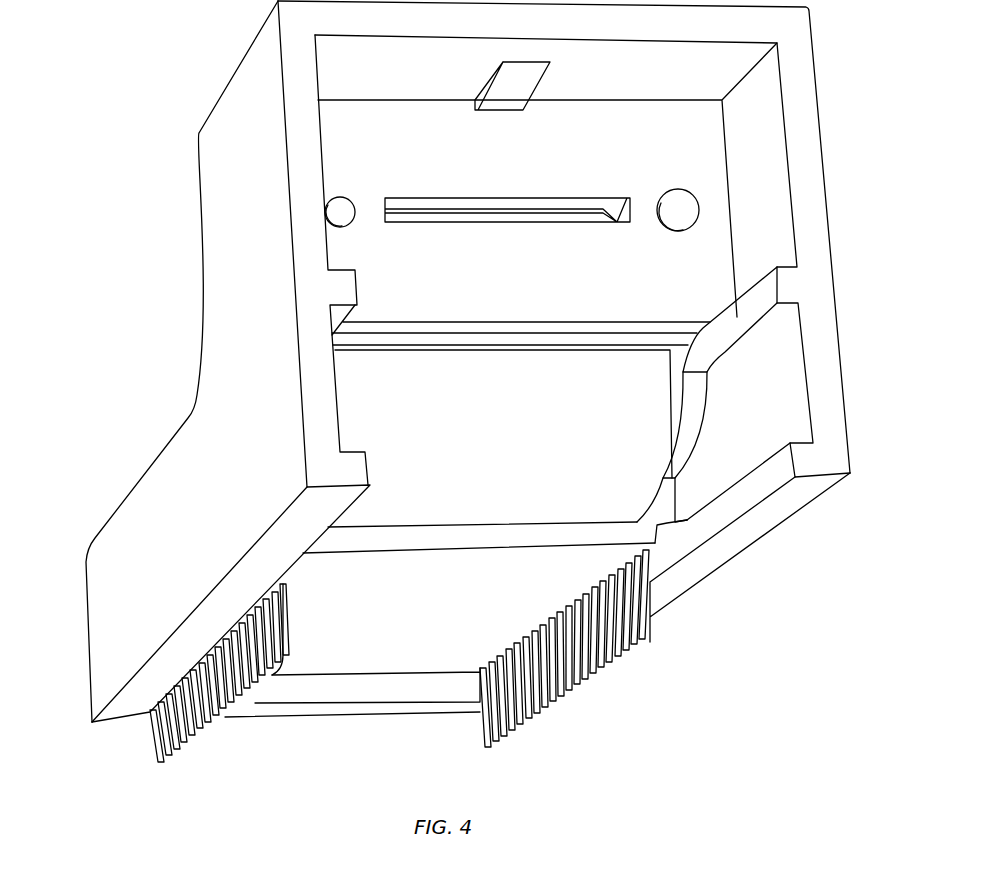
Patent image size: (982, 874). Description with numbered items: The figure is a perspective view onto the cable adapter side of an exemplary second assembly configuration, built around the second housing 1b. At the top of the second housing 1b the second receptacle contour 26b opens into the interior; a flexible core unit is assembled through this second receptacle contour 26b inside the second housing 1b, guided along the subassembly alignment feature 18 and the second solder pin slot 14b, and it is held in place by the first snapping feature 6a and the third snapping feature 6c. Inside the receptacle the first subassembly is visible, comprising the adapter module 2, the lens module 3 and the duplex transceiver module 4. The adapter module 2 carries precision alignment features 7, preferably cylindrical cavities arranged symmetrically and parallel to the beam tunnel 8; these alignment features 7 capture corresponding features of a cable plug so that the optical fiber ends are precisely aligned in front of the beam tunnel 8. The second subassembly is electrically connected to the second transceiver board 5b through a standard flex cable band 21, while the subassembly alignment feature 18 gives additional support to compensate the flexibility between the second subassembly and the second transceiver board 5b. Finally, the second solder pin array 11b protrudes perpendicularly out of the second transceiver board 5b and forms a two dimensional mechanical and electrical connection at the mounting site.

The second housing 1b is at (95, 568).
The adapter module 2 is at (338, 258).
The lens module 3 is at (333, 342).
The duplex transceiver module 4 is at (335, 350).
The second transceiver board 5b is at (383, 593).
The first snapping feature 6a is at (500, 100).
The third snapping feature 6c is at (667, 527).
The precision alignment features 7 is at (332, 213).
The beam tunnel 8 is at (600, 203).
The second solder pin array 11b is at (290, 672).
The second solder pin slot 14b is at (780, 467).
The subassembly alignment feature 18 is at (757, 292).
The flex cable band 21 is at (647, 432).
The second receptacle contour 26b is at (790, 172).